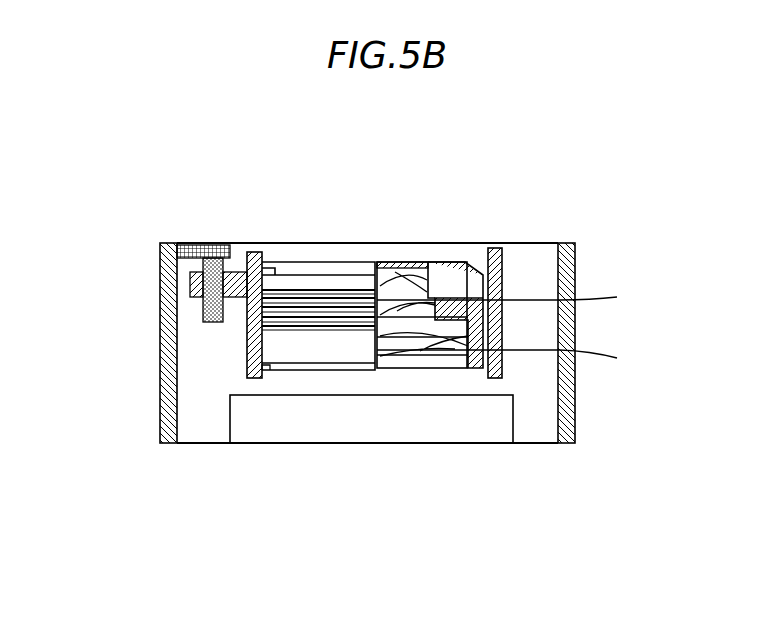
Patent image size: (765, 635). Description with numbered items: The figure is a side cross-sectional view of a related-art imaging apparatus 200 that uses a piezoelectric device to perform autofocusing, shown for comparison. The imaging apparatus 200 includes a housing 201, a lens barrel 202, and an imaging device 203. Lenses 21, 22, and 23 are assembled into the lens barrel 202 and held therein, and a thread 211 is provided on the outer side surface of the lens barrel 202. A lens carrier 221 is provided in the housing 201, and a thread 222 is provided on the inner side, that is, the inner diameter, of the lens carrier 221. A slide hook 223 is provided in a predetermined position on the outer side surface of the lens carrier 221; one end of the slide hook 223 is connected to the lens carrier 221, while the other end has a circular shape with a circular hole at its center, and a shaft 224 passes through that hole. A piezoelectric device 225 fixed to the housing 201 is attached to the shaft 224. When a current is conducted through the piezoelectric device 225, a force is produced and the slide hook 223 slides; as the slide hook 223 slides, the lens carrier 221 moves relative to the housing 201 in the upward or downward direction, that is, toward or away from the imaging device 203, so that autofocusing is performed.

The imaging apparatus 200 is at (502, 472).
The housing 201 is at (170, 445).
The lens barrel 202 is at (447, 260).
The imaging device 203 is at (374, 445).
The lens 21 is at (397, 275).
The lens 22 is at (512, 298).
The lens 23 is at (512, 362).
The thread 211 is at (330, 293).
The lens carrier 221 is at (253, 252).
The thread 222 is at (275, 280).
The slide hook 223 is at (190, 286).
The shaft 224 is at (203, 310).
The piezoelectric device 225 is at (187, 244).